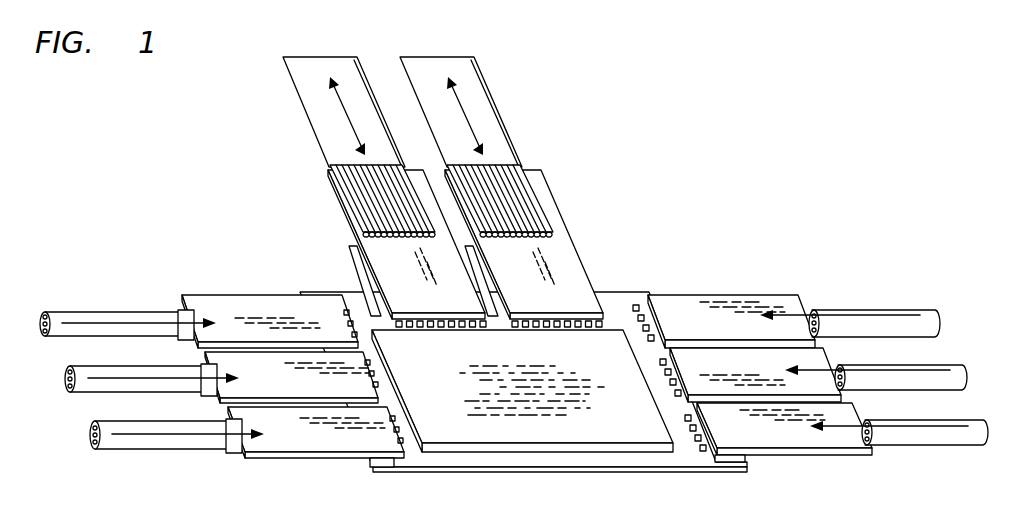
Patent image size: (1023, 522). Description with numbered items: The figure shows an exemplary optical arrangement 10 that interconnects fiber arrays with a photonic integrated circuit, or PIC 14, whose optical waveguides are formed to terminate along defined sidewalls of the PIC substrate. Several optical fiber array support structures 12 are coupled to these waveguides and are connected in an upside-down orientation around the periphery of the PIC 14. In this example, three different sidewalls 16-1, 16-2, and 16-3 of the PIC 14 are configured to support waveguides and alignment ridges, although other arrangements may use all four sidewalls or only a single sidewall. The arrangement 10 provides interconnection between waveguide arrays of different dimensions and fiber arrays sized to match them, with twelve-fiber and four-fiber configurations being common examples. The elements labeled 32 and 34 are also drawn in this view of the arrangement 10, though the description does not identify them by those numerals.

The optical arrangement 10 is at (136, 111).
The optical fiber array support structure 12 is at (273, 454).
The PIC 14 is at (682, 463).
The sidewall 16-1 is at (373, 466).
The sidewall 16-2 is at (345, 293).
The sidewall 16-3 is at (745, 463).
The connector module 32 is at (228, 303).
The cable 34 is at (320, 55).